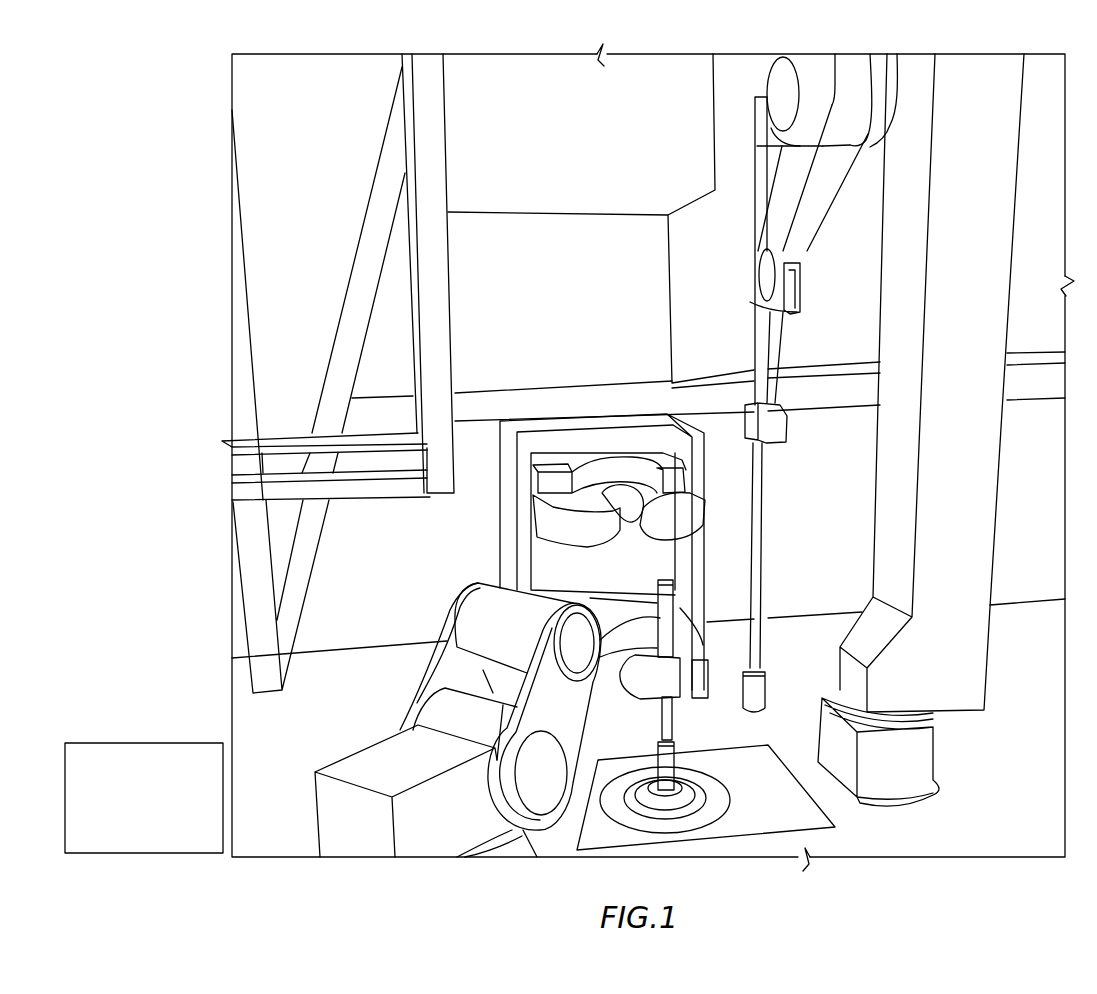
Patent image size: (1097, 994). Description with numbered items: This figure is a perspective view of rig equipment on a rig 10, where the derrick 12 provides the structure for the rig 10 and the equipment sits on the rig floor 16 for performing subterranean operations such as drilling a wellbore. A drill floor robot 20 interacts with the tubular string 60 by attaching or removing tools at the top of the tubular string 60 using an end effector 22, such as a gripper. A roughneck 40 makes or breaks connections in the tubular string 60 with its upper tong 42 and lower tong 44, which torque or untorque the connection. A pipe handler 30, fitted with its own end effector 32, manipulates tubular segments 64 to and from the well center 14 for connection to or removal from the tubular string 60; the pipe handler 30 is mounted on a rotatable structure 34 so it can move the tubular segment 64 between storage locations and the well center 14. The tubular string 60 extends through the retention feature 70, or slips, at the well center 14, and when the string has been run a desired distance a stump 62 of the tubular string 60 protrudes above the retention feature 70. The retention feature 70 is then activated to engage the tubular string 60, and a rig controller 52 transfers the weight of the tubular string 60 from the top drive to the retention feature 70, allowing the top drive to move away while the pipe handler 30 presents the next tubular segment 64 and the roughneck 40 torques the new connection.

The rig 10 is at (183, 53).
The derrick 12 is at (355, 318).
The well center 14 is at (683, 822).
The rig floor 16 is at (986, 816).
The drill floor robot 20 is at (388, 755).
The end effector 22 is at (655, 698).
The pipe handler 30 is at (806, 250).
The end effector 32 is at (775, 427).
The rotatable structure 34 is at (983, 334).
The roughneck 40 is at (555, 430).
The upper tong 42 is at (662, 497).
The lower tong 44 is at (687, 623).
The rig controller 52 is at (158, 818).
The tubular string 60 is at (668, 760).
The stump 62 is at (767, 690).
The tubular segment 64 is at (758, 520).
The retention feature 70 is at (700, 786).